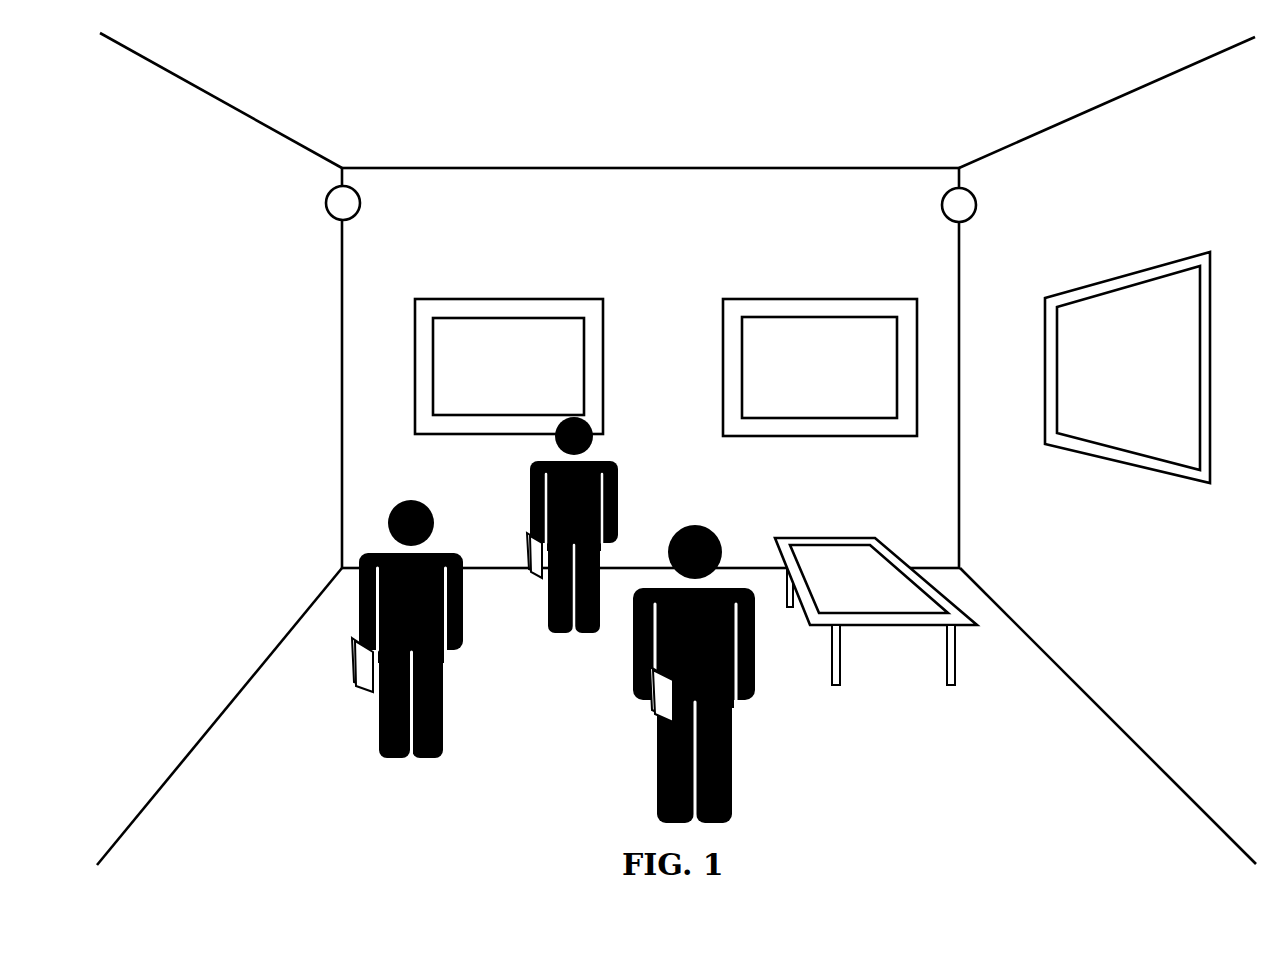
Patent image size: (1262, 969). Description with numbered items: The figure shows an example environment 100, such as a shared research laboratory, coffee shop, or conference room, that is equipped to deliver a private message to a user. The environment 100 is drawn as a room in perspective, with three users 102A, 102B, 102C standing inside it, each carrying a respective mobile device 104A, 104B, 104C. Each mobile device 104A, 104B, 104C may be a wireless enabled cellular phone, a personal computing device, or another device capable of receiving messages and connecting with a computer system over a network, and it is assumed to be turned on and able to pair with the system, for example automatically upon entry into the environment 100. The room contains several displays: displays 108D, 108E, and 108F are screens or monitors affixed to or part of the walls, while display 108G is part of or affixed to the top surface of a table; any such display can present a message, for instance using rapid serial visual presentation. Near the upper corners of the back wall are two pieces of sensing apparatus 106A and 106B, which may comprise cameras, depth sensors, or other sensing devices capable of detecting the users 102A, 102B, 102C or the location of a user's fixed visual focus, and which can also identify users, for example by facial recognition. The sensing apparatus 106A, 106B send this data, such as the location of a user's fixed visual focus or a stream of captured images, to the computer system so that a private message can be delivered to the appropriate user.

The environment 100 is at (359, 124).
The user 102A is at (425, 498).
The user 102B is at (603, 462).
The user 102C is at (705, 525).
The mobile device 104A is at (357, 681).
The mobile device 104B is at (532, 576).
The mobile device 104C is at (650, 706).
The sensing apparatus 106A is at (352, 217).
The sensing apparatus 106B is at (943, 211).
The display 108D is at (508, 316).
The display 108E is at (785, 316).
The display 108F is at (1102, 294).
The display 108G is at (843, 562).